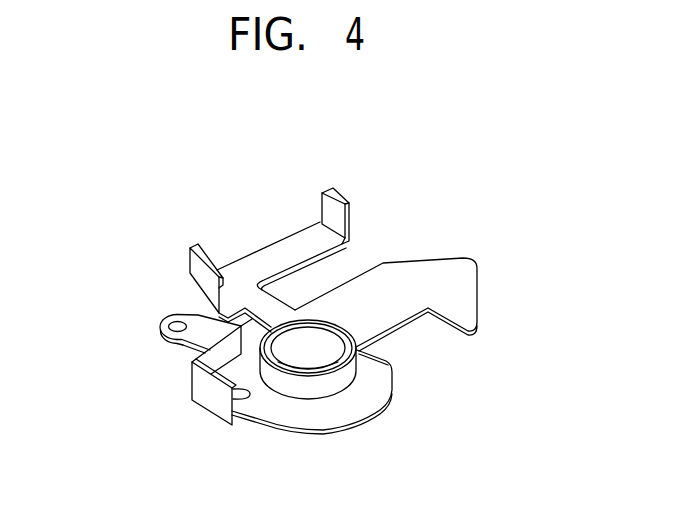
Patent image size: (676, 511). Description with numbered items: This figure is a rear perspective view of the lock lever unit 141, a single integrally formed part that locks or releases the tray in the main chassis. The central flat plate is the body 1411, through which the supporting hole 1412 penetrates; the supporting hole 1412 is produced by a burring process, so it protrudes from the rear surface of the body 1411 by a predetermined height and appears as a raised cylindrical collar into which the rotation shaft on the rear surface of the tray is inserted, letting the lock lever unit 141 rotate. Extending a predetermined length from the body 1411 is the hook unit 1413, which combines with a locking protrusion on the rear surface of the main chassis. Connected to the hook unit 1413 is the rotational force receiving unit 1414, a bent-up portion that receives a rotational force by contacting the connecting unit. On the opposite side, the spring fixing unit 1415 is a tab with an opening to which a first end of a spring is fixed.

The lock lever unit 141 is at (124, 203).
The body 1411 is at (326, 411).
The supporting hole 1412 is at (308, 363).
The hook unit 1413 is at (466, 272).
The rotational force receiving unit 1414 is at (191, 247).
The spring fixing unit 1415 is at (178, 322).